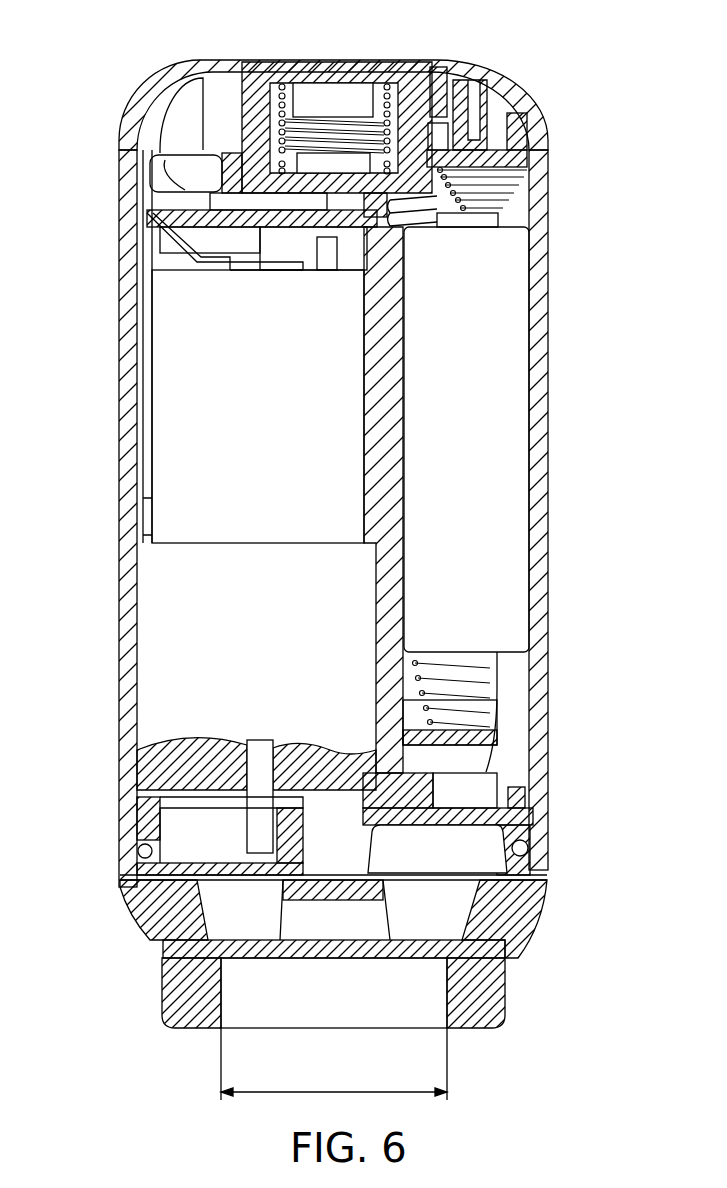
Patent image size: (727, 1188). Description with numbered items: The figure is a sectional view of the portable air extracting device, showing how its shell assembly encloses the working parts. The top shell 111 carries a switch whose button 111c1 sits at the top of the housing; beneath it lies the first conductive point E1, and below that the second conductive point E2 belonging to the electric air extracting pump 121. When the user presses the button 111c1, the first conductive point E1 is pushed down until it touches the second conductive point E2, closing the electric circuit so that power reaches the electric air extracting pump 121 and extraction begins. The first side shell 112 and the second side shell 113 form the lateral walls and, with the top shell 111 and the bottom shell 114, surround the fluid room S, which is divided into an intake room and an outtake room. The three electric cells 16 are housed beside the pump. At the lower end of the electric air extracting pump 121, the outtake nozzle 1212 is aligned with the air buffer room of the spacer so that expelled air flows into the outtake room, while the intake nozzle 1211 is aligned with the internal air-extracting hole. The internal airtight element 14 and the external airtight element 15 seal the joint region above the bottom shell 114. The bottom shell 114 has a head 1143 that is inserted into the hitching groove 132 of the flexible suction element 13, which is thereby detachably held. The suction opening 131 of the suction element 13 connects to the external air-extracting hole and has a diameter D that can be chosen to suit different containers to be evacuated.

The top shell 111 is at (128, 146).
The button 111c1 is at (258, 78).
The first conductive point E1 is at (168, 180).
The second conductive point E2 is at (138, 243).
The electric air extracting pump 121 is at (172, 351).
The first side shell 112 is at (126, 405).
The electric cells 16 is at (510, 389).
The second side shell 113 is at (536, 517).
The outtake nozzle 1212 is at (258, 757).
The intake nozzle 1211 is at (350, 763).
The internal airtight element 14 is at (380, 800).
The bottom shell 114 is at (128, 860).
The external airtight element 15 is at (528, 849).
The fluid room S is at (442, 913).
The head 1143 is at (177, 943).
The hitching groove 132 is at (490, 950).
The suction element 13 is at (177, 997).
The suction opening 131 is at (422, 990).
The diameter D is at (334, 1064).